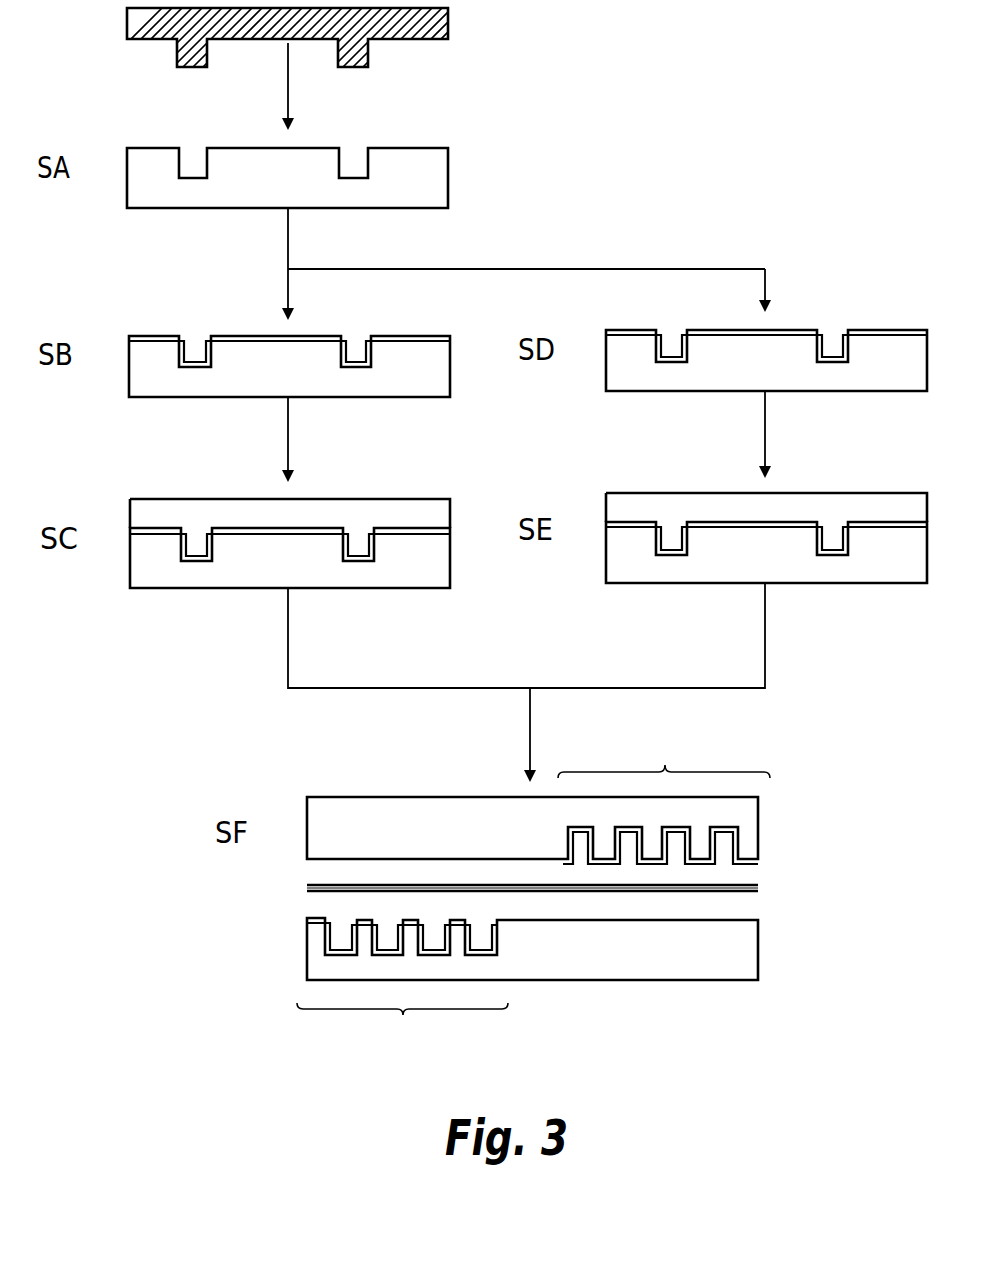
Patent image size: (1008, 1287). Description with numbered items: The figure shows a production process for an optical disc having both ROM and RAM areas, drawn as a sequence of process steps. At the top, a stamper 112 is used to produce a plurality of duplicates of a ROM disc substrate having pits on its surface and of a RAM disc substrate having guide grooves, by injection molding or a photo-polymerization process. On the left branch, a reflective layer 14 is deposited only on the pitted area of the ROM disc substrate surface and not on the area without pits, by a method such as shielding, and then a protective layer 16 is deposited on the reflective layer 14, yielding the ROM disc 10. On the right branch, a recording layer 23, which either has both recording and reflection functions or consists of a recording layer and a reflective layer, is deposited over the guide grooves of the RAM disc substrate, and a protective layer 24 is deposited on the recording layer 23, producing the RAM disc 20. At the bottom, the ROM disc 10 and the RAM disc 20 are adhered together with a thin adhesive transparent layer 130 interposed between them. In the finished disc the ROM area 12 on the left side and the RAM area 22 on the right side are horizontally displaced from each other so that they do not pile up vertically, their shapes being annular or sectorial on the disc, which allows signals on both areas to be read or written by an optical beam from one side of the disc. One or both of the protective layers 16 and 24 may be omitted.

The stamper 112 is at (450, 20).
The ROM disc 10 is at (450, 170).
The RAM disc 20 is at (838, 391).
The reflective layer 14 is at (152, 337).
The protective layer 16 is at (227, 499).
The recording layer 23 is at (880, 330).
The protective layer 24 is at (698, 498).
The adhesive transparent layer 130 is at (758, 889).
The RAM area 22 is at (664, 751).
The ROM area 12 is at (402, 1030).